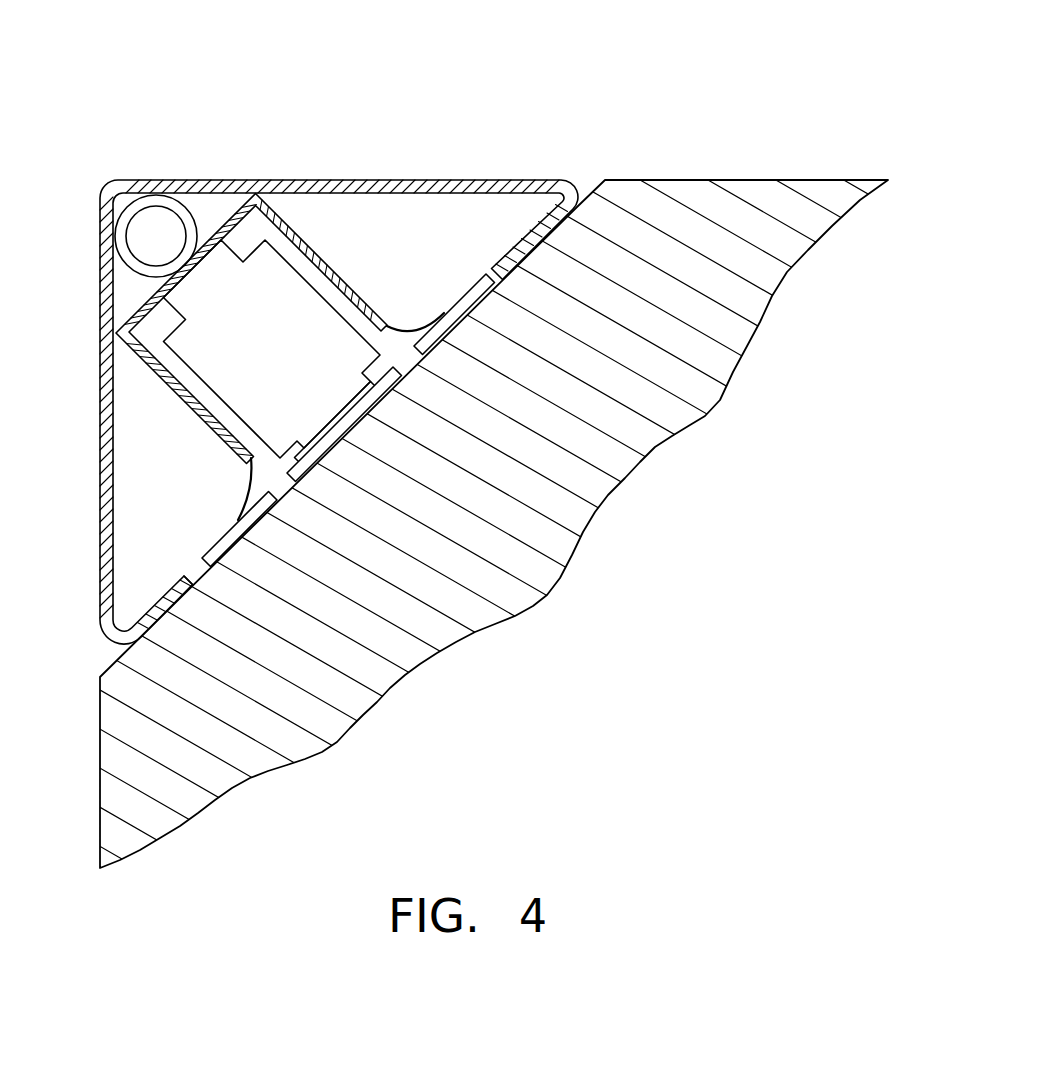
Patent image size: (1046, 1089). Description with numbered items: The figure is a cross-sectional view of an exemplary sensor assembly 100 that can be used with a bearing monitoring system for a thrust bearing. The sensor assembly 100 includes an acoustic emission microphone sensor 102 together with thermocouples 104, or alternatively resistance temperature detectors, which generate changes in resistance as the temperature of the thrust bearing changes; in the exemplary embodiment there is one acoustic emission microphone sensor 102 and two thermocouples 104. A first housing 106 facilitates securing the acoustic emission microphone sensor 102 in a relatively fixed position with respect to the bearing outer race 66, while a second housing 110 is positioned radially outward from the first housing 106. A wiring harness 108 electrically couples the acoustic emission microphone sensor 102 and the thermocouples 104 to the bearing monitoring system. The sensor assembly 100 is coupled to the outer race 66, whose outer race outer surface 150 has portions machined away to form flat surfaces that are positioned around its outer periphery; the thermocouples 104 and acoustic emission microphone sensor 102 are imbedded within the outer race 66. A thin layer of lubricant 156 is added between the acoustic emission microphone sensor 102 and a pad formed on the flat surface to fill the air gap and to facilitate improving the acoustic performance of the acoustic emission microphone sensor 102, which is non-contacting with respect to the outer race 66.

The sensor assembly 100 is at (165, 42).
The outer race 66 is at (681, 179).
The acoustic emission microphone sensor 102 is at (285, 367).
The thermocouple 104 is at (444, 314).
The first housing 106 is at (343, 283).
The wiring harness 108 is at (160, 212).
The second housing 110 is at (319, 179).
The outer race outer surface 150 is at (184, 580).
The lubricant 156 is at (324, 442).